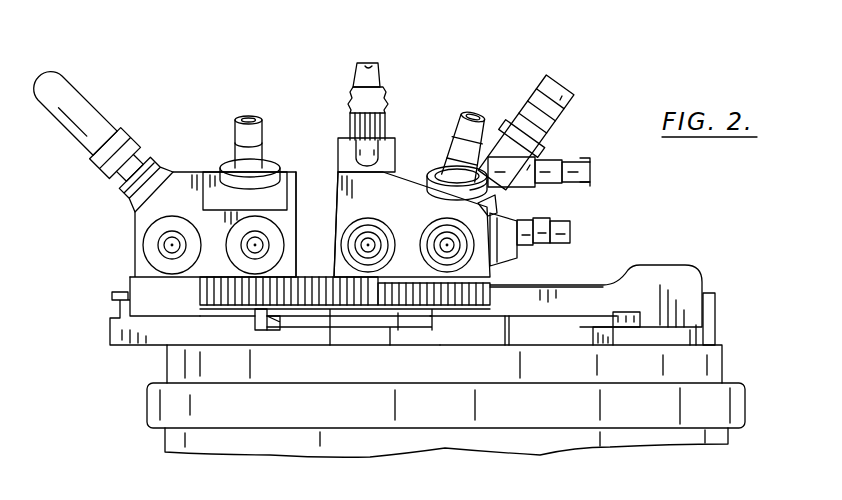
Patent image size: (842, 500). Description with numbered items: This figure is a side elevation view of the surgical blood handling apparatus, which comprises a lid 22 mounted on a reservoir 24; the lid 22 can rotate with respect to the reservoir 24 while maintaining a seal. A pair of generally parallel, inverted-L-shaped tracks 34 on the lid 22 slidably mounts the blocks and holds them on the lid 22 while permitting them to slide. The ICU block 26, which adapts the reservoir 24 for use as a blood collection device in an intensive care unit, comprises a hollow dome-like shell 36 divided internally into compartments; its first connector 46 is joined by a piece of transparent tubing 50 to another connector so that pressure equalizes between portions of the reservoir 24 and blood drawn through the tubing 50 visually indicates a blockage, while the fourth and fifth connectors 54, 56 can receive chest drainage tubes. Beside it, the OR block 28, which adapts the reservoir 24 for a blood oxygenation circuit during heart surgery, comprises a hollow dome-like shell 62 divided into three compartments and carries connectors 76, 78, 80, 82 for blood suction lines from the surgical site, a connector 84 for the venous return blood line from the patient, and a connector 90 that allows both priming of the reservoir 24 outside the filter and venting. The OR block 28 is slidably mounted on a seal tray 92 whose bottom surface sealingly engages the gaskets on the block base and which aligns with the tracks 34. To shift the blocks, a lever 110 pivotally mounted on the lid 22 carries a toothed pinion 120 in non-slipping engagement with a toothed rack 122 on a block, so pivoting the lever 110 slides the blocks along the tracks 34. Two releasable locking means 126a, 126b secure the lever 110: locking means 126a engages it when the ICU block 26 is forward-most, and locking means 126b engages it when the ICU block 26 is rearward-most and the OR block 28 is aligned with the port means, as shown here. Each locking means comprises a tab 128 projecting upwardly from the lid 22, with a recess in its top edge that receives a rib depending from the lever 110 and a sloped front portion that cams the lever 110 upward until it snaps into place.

The lid 22 is at (725, 406).
The reservoir 24 is at (711, 447).
The ICU block 26 is at (190, 160).
The OR block 28 is at (417, 150).
The tracks 34 is at (112, 317).
The shell 36 is at (292, 176).
The first connector 46 is at (123, 182).
The transparent tubing 50 is at (50, 78).
The fourth connector 54 is at (250, 118).
The fifth connector 56 is at (268, 238).
The shell 62 is at (338, 184).
The connector 76 is at (473, 114).
The connector 78 is at (370, 235).
The connector 80 is at (430, 238).
The connector 82 is at (571, 230).
The connector 84 is at (557, 94).
The connector 90 is at (368, 62).
The seal tray 92 is at (715, 320).
The lever 110 is at (603, 283).
The toothed pinion 120 is at (470, 305).
The toothed rack 122 is at (342, 307).
The locking means 126a is at (265, 345).
The locking means 126b is at (622, 345).
The tab 128 is at (250, 320).